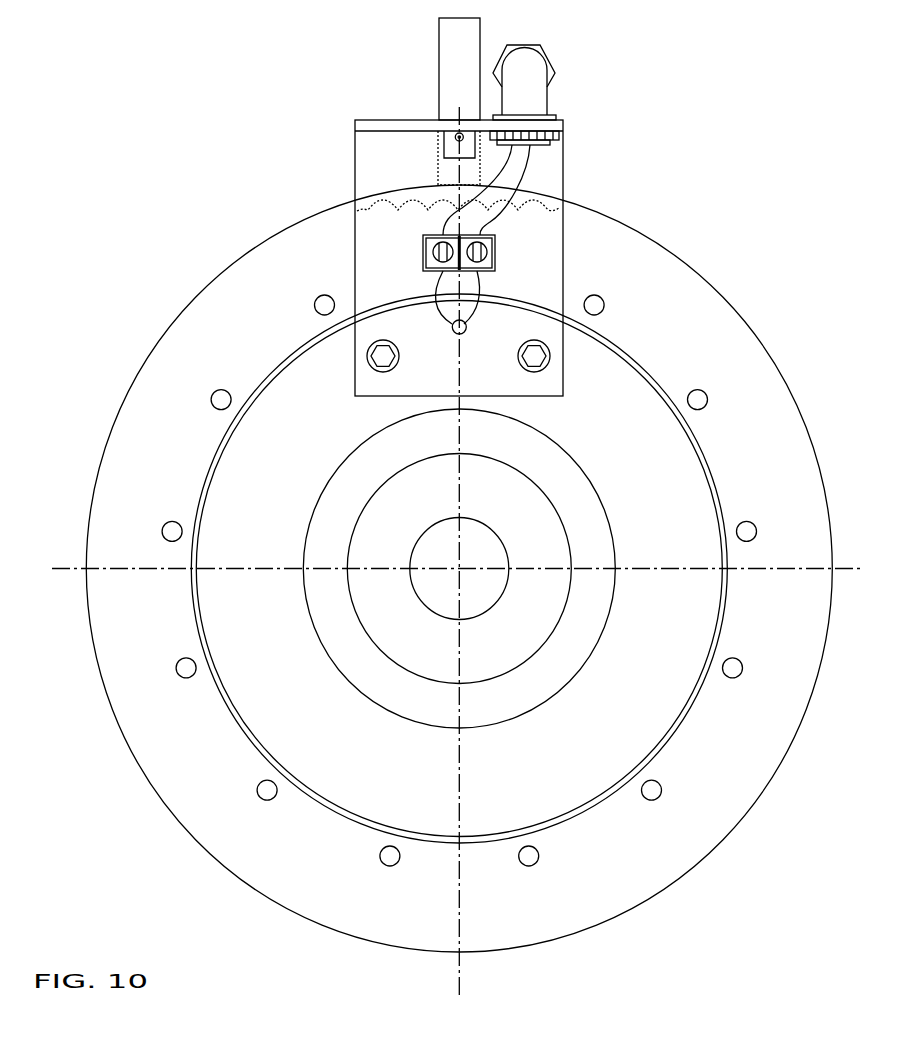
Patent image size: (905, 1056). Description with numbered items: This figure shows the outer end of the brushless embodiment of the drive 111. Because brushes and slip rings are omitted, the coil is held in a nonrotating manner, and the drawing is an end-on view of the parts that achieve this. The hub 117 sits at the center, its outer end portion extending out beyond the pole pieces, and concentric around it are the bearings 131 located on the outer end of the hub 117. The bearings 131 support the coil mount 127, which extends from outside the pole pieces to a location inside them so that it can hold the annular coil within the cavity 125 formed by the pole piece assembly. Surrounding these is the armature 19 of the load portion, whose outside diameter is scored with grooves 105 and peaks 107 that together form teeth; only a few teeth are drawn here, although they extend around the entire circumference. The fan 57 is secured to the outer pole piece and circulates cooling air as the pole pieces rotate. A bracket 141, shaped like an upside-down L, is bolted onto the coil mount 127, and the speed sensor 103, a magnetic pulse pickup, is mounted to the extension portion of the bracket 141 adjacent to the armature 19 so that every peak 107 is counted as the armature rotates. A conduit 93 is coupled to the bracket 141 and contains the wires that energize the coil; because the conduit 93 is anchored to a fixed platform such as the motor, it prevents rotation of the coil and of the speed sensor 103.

The drive 111 is at (217, 267).
The armature 19 is at (172, 332).
The fan 57 is at (150, 396).
The cavity 125 is at (200, 504).
The coil mount 127 is at (242, 466).
The bearings 131 is at (380, 663).
The hub 117 is at (429, 630).
The bracket 141 is at (565, 175).
The speed sensor 103 is at (448, 43).
The conduit 93 is at (530, 77).
The peaks 107 is at (402, 198).
The grooves 105 is at (390, 208).